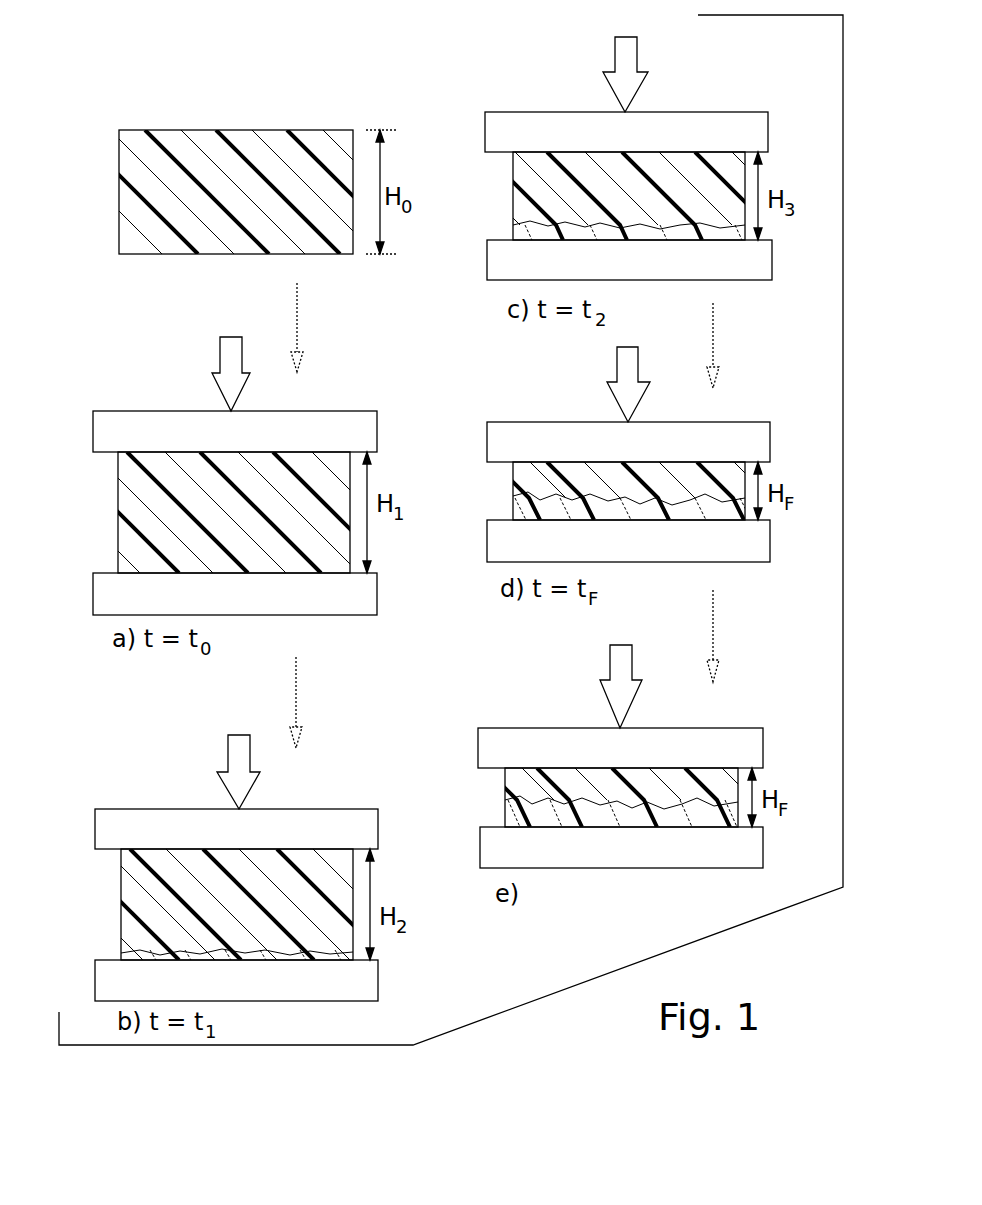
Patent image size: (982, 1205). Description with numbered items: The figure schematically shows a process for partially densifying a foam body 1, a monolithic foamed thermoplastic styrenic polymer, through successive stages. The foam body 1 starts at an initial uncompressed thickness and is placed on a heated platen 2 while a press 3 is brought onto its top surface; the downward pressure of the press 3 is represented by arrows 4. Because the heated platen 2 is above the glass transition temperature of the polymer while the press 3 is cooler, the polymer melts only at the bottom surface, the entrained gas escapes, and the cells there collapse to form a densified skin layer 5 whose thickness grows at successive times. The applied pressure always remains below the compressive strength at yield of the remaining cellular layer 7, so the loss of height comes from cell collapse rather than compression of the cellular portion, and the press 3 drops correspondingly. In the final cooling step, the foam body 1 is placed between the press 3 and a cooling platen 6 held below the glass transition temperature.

The foam body 1 is at (119, 198).
The heated platen 2 is at (93, 600).
The press 3 is at (93, 436).
The arrows 4 is at (220, 350).
The densified skin layer 5 is at (120, 957).
The cooling platen 6 is at (480, 845).
The cellular layer 7 is at (121, 876).